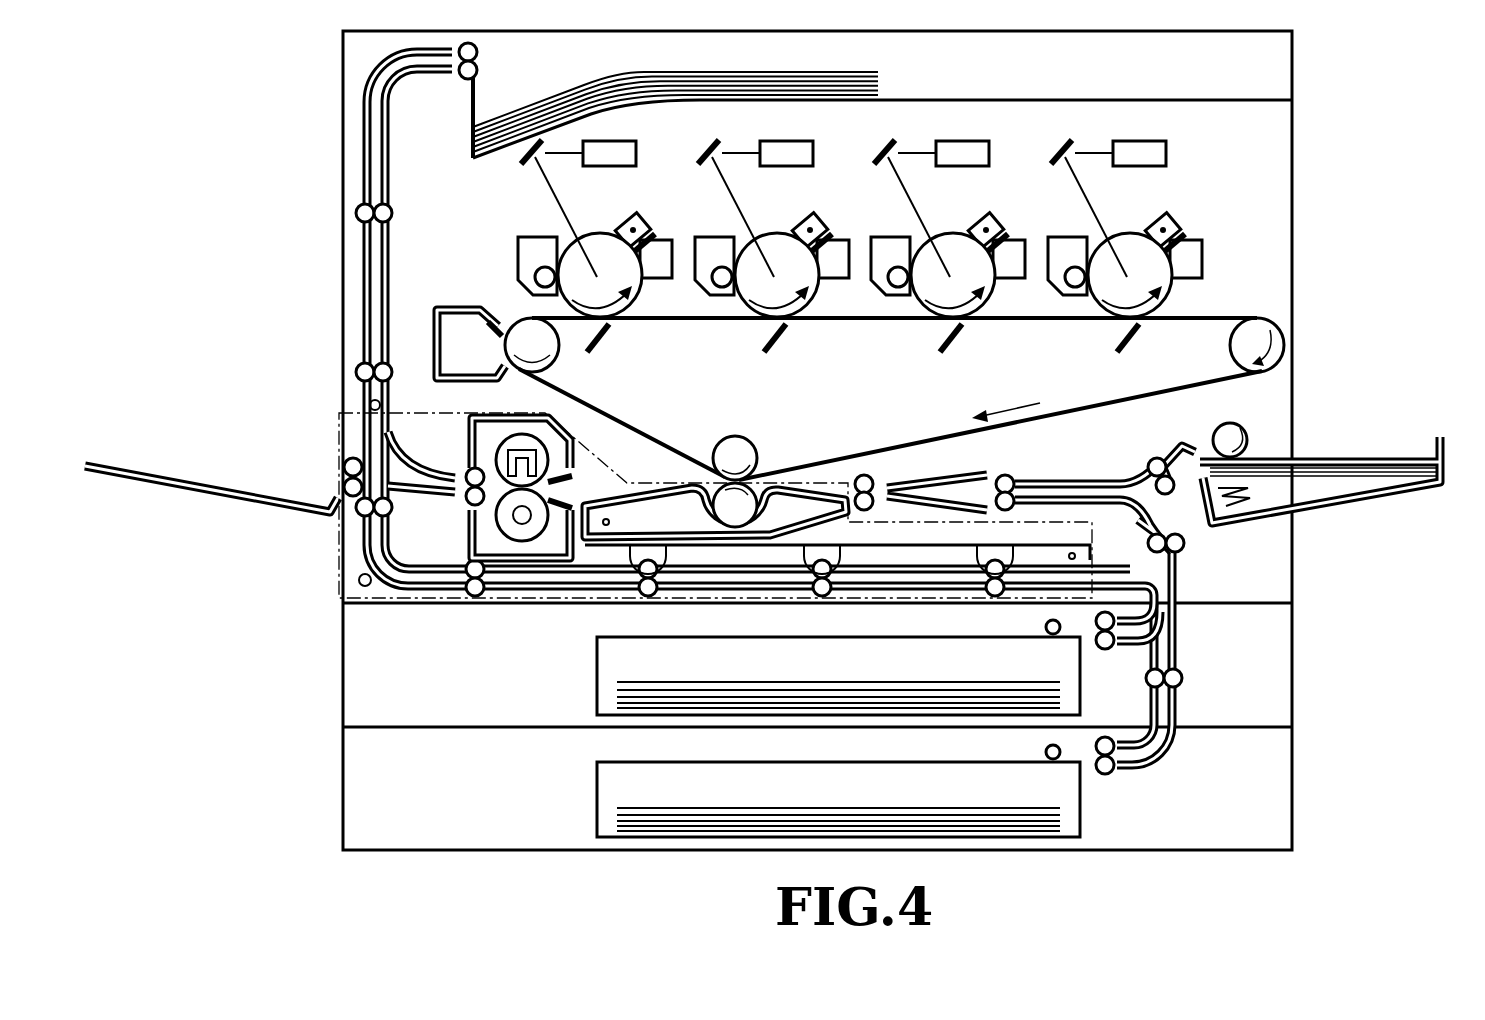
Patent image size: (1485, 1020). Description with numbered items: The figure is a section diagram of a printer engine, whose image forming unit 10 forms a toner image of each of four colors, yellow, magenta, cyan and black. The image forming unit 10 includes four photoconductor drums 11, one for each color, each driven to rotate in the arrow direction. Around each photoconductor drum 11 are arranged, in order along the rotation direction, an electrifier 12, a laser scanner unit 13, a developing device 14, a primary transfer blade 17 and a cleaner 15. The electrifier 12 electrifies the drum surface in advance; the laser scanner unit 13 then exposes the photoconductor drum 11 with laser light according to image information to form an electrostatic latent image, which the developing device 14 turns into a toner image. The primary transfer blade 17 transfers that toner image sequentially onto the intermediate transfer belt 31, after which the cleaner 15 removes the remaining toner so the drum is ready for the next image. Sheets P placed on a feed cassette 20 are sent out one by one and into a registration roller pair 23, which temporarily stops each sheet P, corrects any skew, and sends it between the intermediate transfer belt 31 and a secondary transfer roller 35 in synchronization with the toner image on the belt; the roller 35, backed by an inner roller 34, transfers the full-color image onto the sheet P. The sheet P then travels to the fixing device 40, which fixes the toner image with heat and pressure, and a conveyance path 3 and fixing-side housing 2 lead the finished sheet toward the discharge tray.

The image forming unit 10 is at (1213, 180).
The photoconductor drum 11 is at (592, 232).
The electrifier 12 is at (636, 218).
The laser scanner unit 13 is at (642, 133).
The developing device 14 is at (546, 237).
The cleaner 15 is at (643, 279).
The primary transfer blade 17 is at (611, 340).
The fixing device 2 is at (715, 470).
The sheet discharge unit 3 is at (1078, 515).
The feed cassette 20 is at (805, 737).
The registration roller pair 23 is at (874, 486).
The intermediate transfer belt 31 is at (882, 446).
The secondary transfer inner roller 34 is at (735, 434).
The secondary transfer roller 35 is at (750, 498).
The fixing device 40 is at (572, 418).
The sheet P is at (716, 682).